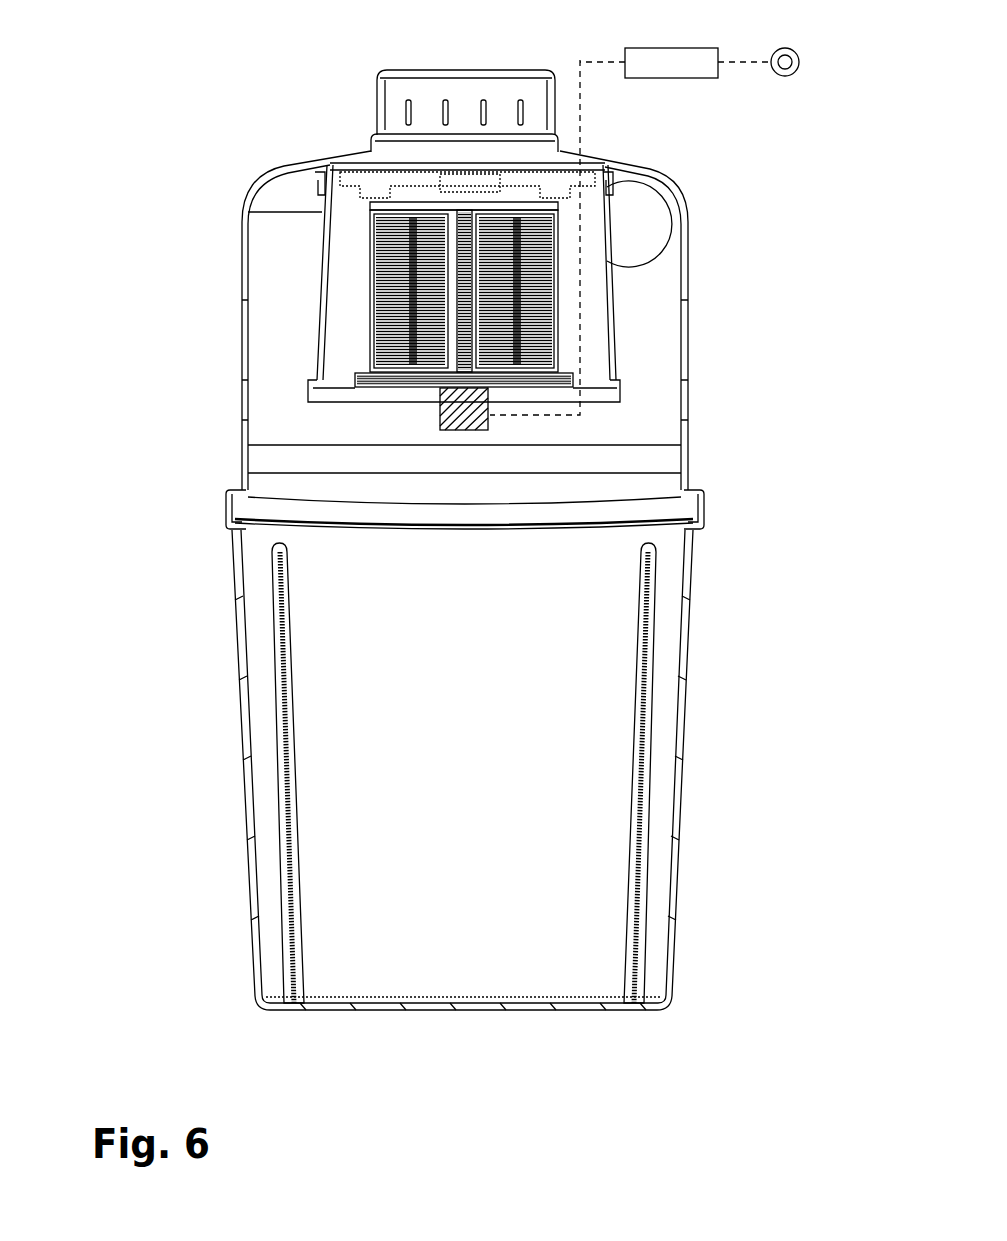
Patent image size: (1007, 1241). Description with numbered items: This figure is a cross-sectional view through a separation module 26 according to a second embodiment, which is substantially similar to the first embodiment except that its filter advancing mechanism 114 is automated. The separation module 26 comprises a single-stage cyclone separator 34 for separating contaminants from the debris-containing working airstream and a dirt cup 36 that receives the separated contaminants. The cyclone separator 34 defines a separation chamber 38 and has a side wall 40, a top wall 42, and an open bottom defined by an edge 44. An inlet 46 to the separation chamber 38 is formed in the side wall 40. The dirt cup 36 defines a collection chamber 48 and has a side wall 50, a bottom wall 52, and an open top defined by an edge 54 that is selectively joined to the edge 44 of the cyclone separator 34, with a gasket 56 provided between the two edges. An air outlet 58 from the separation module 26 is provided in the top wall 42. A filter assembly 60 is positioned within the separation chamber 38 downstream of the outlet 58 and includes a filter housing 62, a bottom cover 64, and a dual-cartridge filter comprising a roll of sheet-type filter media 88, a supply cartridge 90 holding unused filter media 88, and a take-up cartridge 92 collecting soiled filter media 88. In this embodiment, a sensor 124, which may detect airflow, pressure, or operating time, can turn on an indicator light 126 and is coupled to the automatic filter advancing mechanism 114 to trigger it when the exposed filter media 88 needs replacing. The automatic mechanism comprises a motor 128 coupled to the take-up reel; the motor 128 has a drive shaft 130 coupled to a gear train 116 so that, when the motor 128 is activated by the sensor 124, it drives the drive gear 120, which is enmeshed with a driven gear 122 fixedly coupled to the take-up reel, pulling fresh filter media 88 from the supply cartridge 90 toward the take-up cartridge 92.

The separation module 26 is at (182, 84).
The cyclone separator 34 is at (236, 268).
The dirt cup 36 is at (676, 885).
The separation chamber 38 is at (302, 368).
The side wall 40 is at (242, 298).
The top wall 42 is at (555, 175).
The edge 44 is at (704, 498).
The inlet 46 is at (664, 228).
The collection chamber 48 is at (486, 904).
The side wall 50 is at (248, 890).
The bottom wall 52 is at (550, 1010).
The edge 54 is at (226, 505).
The gasket 56 is at (698, 515).
The air outlet 58 is at (425, 74).
The filter assembly 60 is at (582, 292).
The filter housing 62 is at (600, 200).
The bottom cover 64 is at (380, 393).
The filter media 88 is at (548, 358).
The supply cartridge 90 is at (410, 210).
The take-up cartridge 92 is at (470, 200).
The filter advancing mechanism 114 is at (512, 398).
The gear train 116 is at (573, 381).
The drive gear 120 is at (410, 360).
The driven gear 122 is at (540, 386).
The sensor 124 is at (672, 48).
The indicator light 126 is at (790, 58).
The motor 128 is at (445, 420).
The drive shaft 130 is at (442, 392).